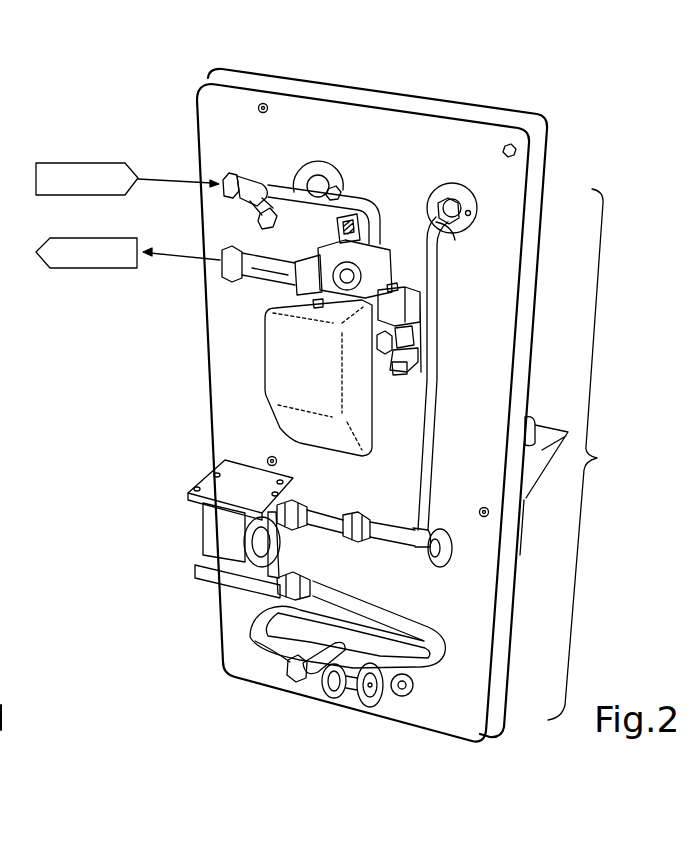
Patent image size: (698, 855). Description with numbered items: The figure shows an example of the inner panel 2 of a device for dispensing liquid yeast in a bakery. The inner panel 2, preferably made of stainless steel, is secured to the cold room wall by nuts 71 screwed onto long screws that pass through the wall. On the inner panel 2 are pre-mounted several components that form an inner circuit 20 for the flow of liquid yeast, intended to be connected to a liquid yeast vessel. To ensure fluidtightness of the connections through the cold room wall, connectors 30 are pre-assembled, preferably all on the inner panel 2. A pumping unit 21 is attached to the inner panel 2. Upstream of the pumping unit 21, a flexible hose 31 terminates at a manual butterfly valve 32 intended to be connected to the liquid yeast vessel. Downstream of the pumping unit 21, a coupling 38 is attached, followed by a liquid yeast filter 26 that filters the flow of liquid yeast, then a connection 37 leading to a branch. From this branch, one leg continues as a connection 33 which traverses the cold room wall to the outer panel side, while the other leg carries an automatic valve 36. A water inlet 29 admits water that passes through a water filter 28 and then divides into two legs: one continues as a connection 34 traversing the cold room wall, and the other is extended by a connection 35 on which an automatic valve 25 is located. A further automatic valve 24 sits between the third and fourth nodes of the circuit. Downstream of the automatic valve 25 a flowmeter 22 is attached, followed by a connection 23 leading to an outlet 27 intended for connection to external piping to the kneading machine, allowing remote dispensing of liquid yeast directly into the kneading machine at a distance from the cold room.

The inner panel 2 is at (418, 128).
The inner circuit 20 is at (576, 454).
The pumping unit 21 is at (215, 540).
The flowmeter 22 is at (275, 348).
The connection 23 is at (262, 275).
The automatic valve 24 is at (417, 357).
The automatic valve 25 is at (397, 252).
The liquid yeast filter 26 is at (447, 547).
The outlet 27 is at (100, 263).
The water filter 28 is at (247, 170).
The water inlet 29 is at (99, 189).
The connectors 30 is at (333, 185).
The hose 31 is at (436, 652).
The manual butterfly valve 32 is at (317, 692).
The connection 33 is at (432, 250).
The connection 34 is at (310, 157).
The connection 35 is at (369, 205).
The automatic valve 36 is at (423, 265).
The connection 37 is at (425, 425).
The coupling 38 is at (332, 517).
The nuts 71 is at (258, 105).